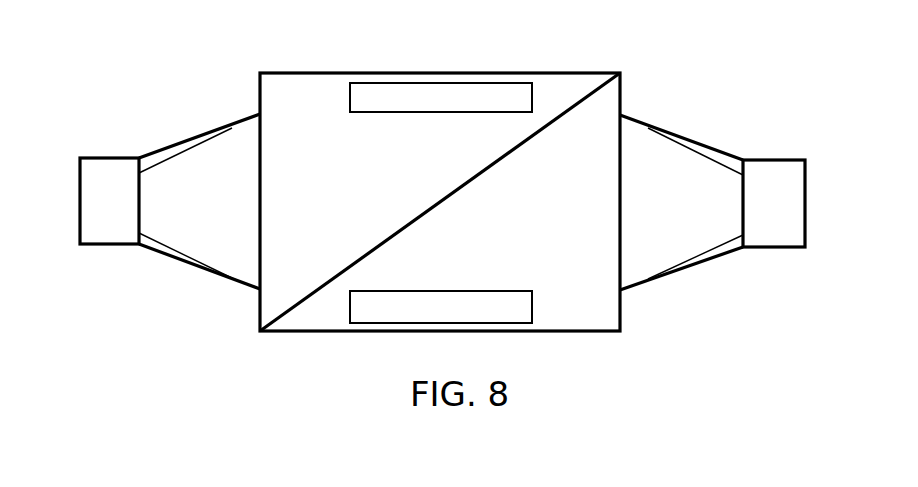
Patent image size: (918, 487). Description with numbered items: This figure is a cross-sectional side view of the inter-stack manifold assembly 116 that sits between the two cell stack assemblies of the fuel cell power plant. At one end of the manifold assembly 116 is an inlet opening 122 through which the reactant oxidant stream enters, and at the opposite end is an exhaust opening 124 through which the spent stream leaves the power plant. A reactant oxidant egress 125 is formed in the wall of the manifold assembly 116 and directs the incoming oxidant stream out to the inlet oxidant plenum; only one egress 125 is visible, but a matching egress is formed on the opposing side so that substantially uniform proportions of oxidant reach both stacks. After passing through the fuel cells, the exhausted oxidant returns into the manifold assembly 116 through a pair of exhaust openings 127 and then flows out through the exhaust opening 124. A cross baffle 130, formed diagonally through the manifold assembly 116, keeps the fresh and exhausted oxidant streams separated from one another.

The inter-stack manifold assembly 116 is at (211, 81).
The inlet opening 122 is at (65, 175).
The exhaust opening 124 is at (822, 186).
The reactant oxidant egress 125 is at (495, 92).
The exhaust openings 127 is at (493, 315).
The cross baffle 130 is at (379, 224).